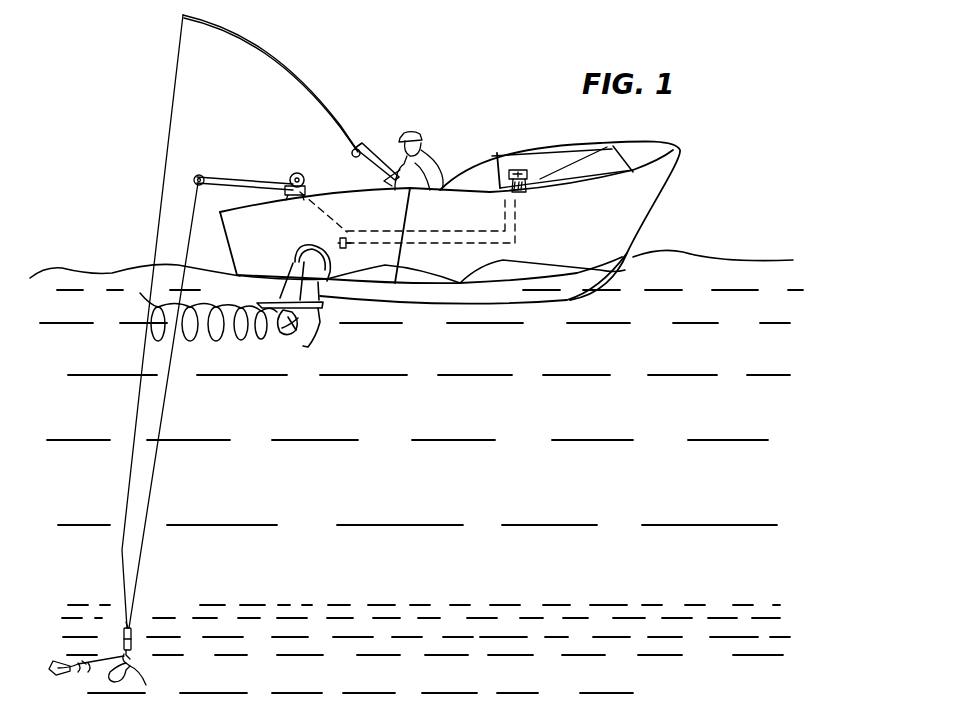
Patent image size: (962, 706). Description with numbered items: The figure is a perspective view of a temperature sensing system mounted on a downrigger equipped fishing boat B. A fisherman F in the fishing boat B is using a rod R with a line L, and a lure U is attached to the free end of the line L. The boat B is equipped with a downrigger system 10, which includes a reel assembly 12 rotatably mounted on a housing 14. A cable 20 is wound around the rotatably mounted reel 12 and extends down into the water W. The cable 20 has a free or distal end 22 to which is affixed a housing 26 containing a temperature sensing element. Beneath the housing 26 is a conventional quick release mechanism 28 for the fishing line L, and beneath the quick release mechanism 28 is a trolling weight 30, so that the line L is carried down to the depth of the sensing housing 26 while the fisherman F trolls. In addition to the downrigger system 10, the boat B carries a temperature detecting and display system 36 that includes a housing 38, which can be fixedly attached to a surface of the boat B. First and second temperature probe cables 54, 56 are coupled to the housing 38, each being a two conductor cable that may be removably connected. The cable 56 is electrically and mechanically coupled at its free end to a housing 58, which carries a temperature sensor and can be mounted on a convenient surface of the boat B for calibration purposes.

The downrigger system 10 is at (250, 137).
The reel assembly 12 is at (302, 172).
The housing 14 is at (283, 179).
The cable 20 is at (166, 410).
The free end 22 is at (134, 624).
The housing 26 is at (134, 641).
The quick release mechanism 28 is at (131, 660).
The trolling weight 30 is at (132, 684).
The temperature detecting and display system 36 is at (508, 138).
The housing 38 is at (523, 174).
The first temperature probe cable 54 is at (413, 230).
The second temperature probe cable 56 is at (458, 242).
The housing 58 is at (342, 240).
The rod R is at (347, 113).
The line L is at (160, 181).
The fisherman F is at (437, 163).
The fishing boat B is at (466, 225).
The water W is at (679, 364).
The lure U is at (62, 666).